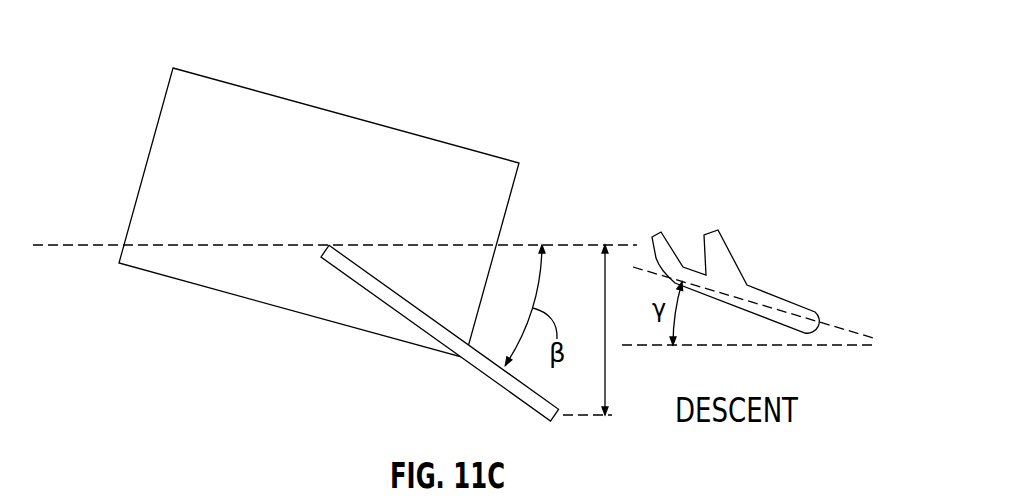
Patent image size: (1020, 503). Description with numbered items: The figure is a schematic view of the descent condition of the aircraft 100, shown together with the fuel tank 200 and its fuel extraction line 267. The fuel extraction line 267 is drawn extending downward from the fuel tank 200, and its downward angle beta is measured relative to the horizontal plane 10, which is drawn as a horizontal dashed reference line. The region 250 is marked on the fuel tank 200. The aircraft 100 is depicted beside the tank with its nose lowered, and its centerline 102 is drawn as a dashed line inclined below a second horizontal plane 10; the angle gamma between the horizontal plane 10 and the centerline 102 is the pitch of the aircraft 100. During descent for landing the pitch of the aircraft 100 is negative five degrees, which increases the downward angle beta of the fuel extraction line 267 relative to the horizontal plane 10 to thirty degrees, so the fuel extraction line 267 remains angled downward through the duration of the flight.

The horizontal plane 10 is at (70, 245).
The fuel tank 200 is at (223, 82).
The region of structure 250 is at (332, 216).
The fuel extraction line 267 is at (492, 371).
The aircraft 100 is at (775, 296).
The centerline 102 is at (847, 332).